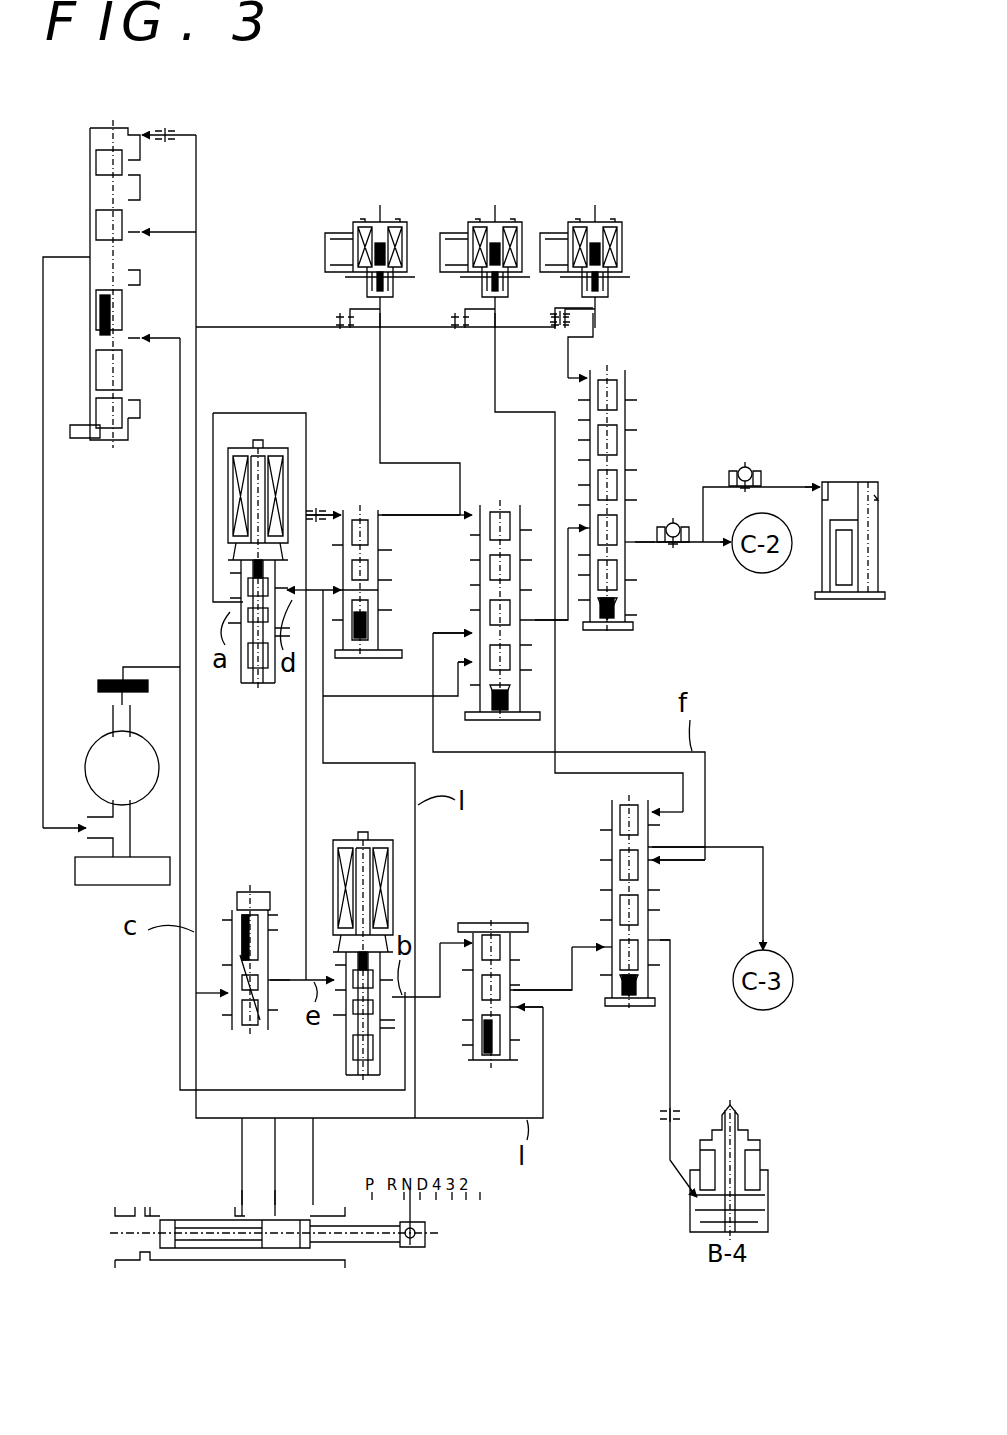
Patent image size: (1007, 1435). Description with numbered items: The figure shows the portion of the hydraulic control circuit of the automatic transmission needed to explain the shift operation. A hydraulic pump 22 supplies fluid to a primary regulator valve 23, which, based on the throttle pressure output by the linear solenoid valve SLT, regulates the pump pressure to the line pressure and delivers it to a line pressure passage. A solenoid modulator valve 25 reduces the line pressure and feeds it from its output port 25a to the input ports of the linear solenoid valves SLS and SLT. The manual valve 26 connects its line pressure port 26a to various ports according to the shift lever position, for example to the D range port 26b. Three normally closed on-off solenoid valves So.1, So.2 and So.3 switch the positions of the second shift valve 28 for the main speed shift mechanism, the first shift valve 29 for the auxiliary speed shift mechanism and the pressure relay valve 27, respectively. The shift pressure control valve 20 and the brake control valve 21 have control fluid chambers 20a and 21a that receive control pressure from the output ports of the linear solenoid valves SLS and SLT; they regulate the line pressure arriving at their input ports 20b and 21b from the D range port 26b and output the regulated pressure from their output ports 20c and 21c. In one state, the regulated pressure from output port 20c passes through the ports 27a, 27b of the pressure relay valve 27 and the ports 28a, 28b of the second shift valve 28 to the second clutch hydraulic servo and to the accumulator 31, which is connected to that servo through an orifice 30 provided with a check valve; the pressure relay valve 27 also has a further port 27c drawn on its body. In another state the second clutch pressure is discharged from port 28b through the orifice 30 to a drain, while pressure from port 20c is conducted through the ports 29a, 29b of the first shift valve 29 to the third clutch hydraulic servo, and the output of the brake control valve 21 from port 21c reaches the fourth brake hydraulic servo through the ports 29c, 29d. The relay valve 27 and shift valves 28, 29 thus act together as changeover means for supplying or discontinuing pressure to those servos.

The shift pressure control valve 20 is at (345, 505).
The control fluid chamber 20a is at (368, 512).
The input port 20b is at (314, 537).
The output port 20c is at (392, 575).
The B-4 control valve 21 is at (505, 905).
The control fluid chamber 21a is at (485, 922).
The input port 21b is at (520, 1010).
The output port 21c is at (515, 990).
The hydraulic pump 22 is at (92, 745).
The primary regulator valve 23 is at (88, 200).
The solenoid modulator valve 25 is at (240, 885).
The output port 25a is at (270, 968).
The manual valve 26 is at (185, 1200).
The line pressure port 26a is at (240, 1210).
The D range port 26b is at (272, 1200).
The pressure relay valve 27 is at (488, 492).
The port 27a is at (452, 630).
The port 27b is at (540, 625).
The port of valve 27 27c is at (458, 662).
The second (M2) shift valve 28 is at (640, 385).
The port 28a is at (585, 528).
The port 28b is at (637, 545).
The first (U1) shift valve 29 is at (580, 850).
The port 29a is at (658, 862).
The port 29b is at (665, 840).
The port 29c is at (603, 948).
The port 29d is at (658, 940).
The orifice 30 is at (752, 465).
The C2 accumulator 31 is at (856, 478).
The solenoid valve So.1 is at (612, 198).
The solenoid valve So.2 is at (512, 198).
The solenoid valve So.3 is at (395, 198).
The linear solenoid valve SLS is at (268, 445).
The linear solenoid valve SLT is at (368, 835).